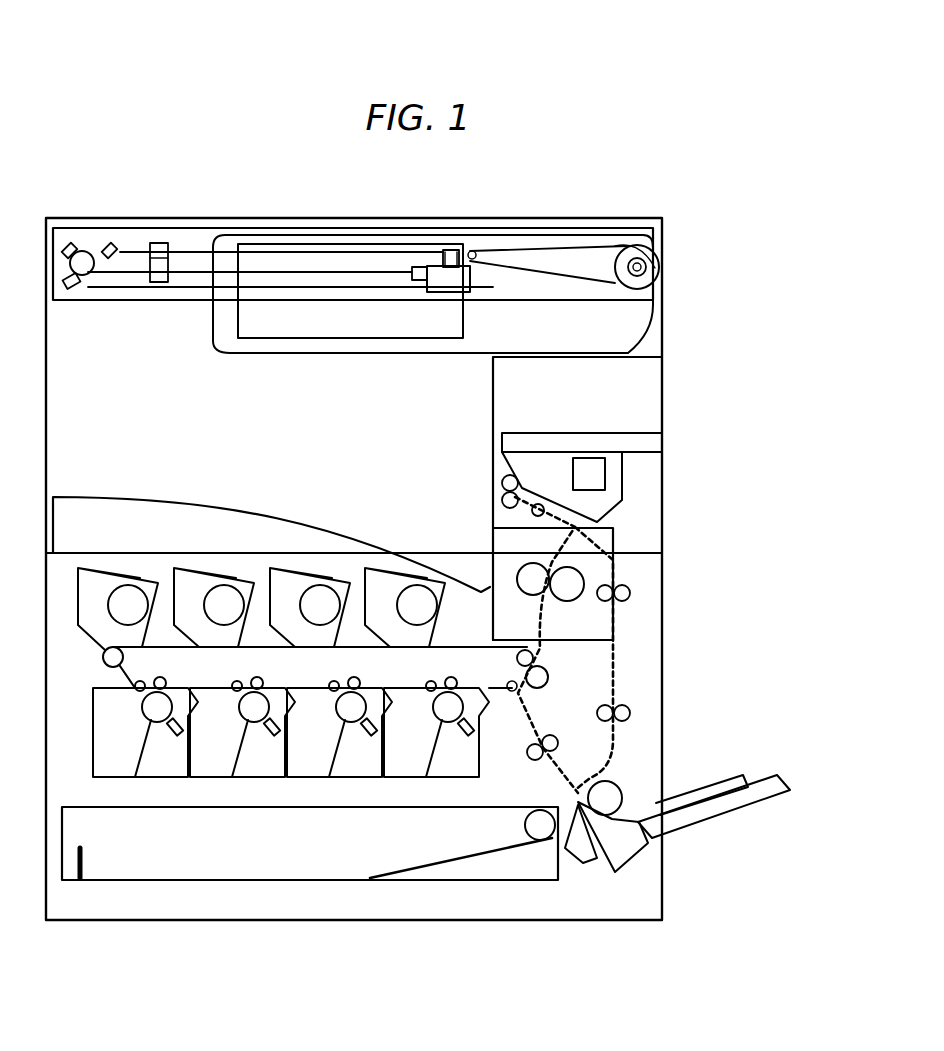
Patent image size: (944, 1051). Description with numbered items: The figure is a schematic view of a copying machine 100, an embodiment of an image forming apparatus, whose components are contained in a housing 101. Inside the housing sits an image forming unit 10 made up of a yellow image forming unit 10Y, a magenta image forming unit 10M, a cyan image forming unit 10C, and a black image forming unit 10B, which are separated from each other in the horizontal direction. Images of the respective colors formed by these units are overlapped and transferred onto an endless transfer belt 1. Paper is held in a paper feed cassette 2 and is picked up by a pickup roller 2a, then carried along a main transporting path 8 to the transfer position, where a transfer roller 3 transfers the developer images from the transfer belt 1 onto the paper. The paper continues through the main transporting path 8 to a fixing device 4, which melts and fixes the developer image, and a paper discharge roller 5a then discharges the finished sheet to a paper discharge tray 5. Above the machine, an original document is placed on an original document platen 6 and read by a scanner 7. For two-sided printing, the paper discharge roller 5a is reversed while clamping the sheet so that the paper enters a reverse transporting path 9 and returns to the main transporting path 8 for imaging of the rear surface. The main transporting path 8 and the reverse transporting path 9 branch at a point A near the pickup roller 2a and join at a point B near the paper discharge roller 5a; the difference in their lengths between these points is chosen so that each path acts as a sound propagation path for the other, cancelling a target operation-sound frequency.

The copying machine 100 is at (703, 216).
The housing 101 is at (663, 380).
The original document platen 6 is at (300, 218).
The scanner 7 is at (88, 303).
The paper discharge tray 5 is at (262, 500).
The paper discharge roller 5a is at (502, 479).
The point B is at (580, 526).
The reverse transporting path 9 is at (618, 640).
The fixing device 4 is at (582, 636).
The transfer belt 1 is at (465, 645).
The transfer roller 3 is at (546, 683).
The main transporting path 8 is at (518, 703).
The paper feed cassette 2 is at (82, 806).
The pickup roller 2a is at (540, 832).
The point A is at (567, 781).
The image forming unit 10 is at (112, 985).
The yellow image forming unit 10Y is at (163, 765).
The magenta image forming unit 10M is at (258, 765).
The cyan image forming unit 10C is at (355, 765).
The black image forming unit 10B is at (452, 765).